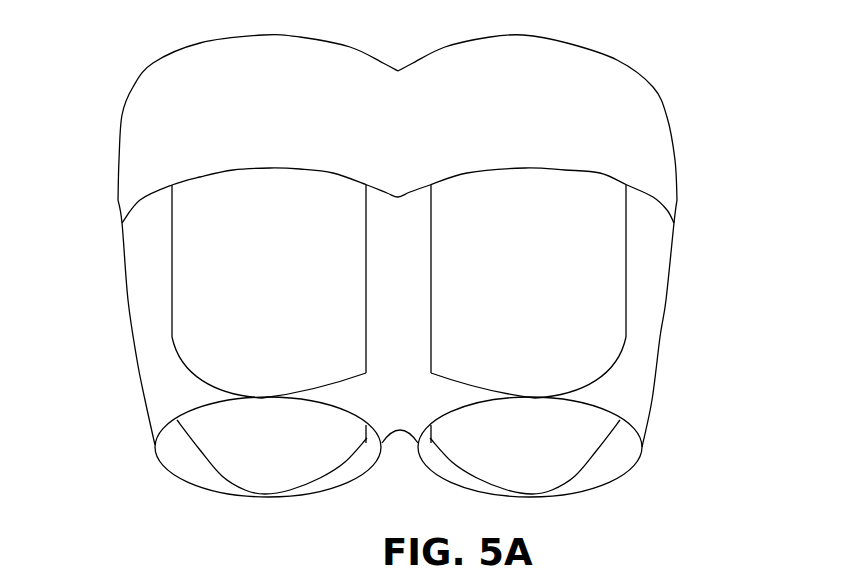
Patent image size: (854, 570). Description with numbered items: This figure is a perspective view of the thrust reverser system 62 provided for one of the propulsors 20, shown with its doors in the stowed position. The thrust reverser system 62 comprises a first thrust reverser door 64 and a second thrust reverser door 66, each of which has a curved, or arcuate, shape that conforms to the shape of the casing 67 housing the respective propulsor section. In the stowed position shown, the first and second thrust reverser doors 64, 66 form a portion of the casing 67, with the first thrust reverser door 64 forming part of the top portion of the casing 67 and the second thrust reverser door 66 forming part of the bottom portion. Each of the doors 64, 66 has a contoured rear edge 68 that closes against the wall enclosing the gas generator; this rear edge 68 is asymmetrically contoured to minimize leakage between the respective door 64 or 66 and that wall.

The propulsor 20 is at (608, 88).
The thrust reverser system 62 is at (697, 95).
The first thrust reverser door 64 is at (193, 297).
The second thrust reverser door 66 is at (188, 480).
The casing 67 is at (143, 257).
The contoured rear edge 68 is at (324, 385).